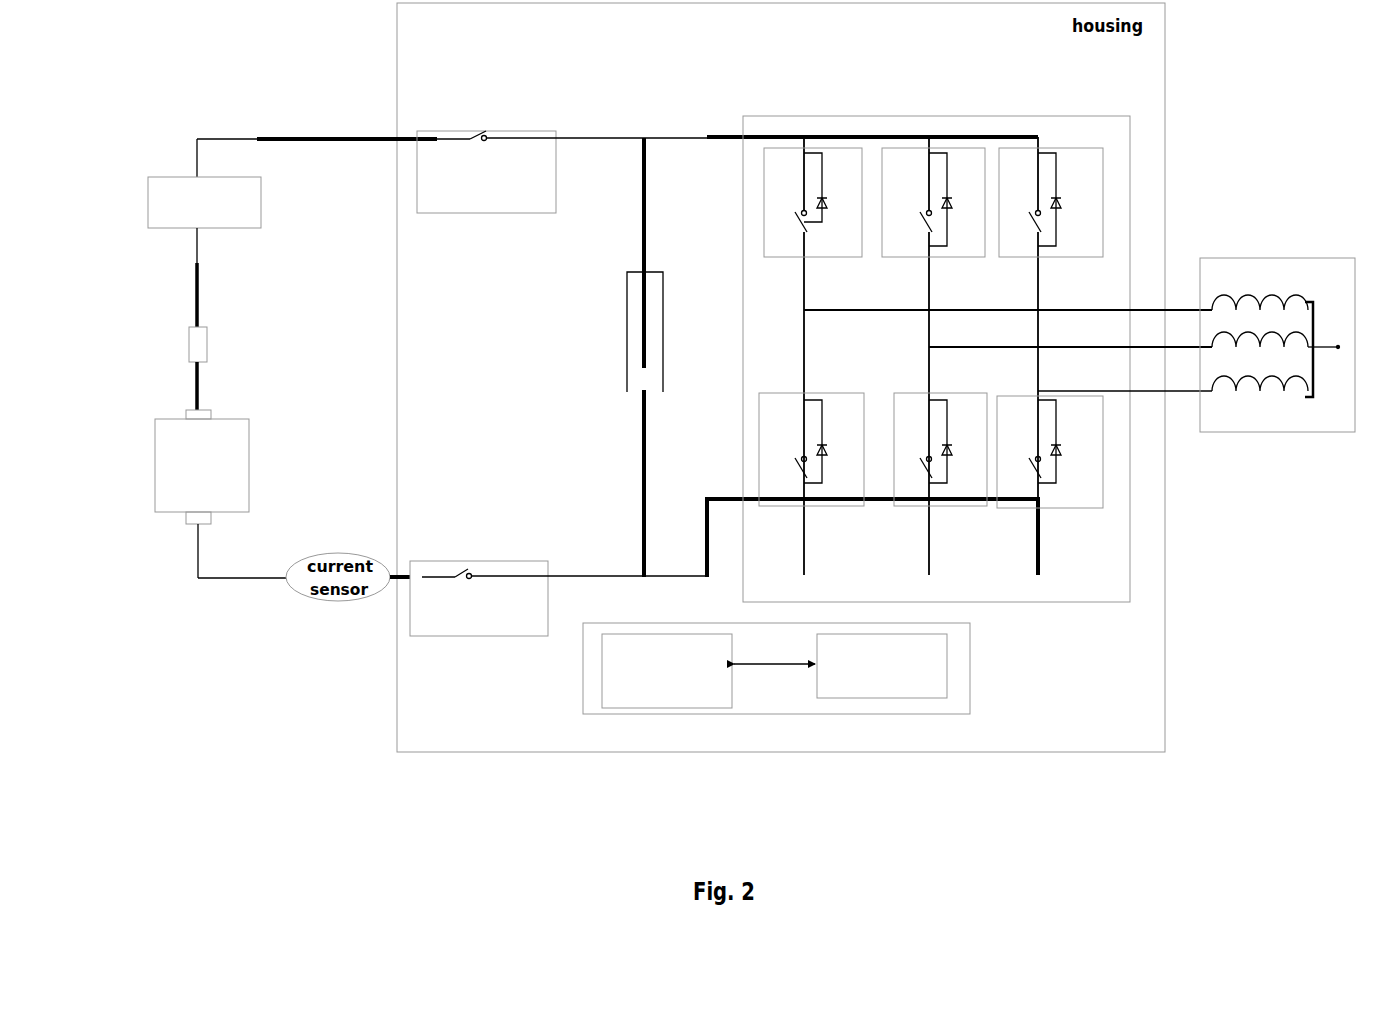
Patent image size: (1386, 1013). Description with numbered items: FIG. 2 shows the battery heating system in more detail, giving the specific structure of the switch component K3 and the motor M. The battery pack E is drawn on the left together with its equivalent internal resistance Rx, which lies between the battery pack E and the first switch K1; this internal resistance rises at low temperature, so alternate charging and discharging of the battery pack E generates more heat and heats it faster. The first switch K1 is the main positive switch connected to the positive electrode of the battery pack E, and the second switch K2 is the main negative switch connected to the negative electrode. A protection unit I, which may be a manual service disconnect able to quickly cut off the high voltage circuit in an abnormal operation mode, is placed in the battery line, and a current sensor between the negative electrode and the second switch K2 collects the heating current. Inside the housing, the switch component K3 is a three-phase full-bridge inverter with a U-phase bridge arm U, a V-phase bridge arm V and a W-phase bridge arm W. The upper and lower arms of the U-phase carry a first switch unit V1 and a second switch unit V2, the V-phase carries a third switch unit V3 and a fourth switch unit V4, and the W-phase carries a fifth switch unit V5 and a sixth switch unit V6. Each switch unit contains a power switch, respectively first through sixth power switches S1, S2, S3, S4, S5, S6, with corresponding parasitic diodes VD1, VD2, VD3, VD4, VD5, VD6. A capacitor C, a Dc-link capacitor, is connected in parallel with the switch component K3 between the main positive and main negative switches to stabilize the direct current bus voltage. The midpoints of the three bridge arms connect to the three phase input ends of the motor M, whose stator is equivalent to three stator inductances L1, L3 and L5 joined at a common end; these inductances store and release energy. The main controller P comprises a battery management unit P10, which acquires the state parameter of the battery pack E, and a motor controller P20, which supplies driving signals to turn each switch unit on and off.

The first switch K1 is at (562, 148).
The second switch K2 is at (558, 614).
The switch component K3 is at (936, 339).
The capacitor C is at (654, 357).
The main controller P is at (804, 668).
The battery management unit P10 is at (667, 671).
The motor controller P20 is at (882, 666).
The first switch unit V1 is at (815, 222).
The second switch unit V2 is at (816, 470).
The third switch unit V3 is at (938, 222).
The fourth switch unit V4 is at (945, 470).
The fifth switch unit V5 is at (1053, 222).
The sixth switch unit V6 is at (1050, 471).
The first power switch S1 is at (791, 210).
The second power switch S2 is at (792, 458).
The third power switch S3 is at (915, 210).
The fourth power switch S4 is at (919, 458).
The fifth power switch S5 is at (1026, 210).
The sixth power switch S6 is at (1027, 458).
The parasitic diode VD1 is at (835, 187).
The parasitic diode VD2 is at (835, 441).
The parasitic diode VD3 is at (959, 199).
The parasitic diode VD4 is at (959, 441).
The parasitic diode VD5 is at (1069, 199).
The parasitic diode VD6 is at (1069, 441).
The U-phase bridge arm U is at (994, 306).
The V-phase bridge arm V is at (1057, 350).
The W-phase bridge arm W is at (1114, 391).
The stator inductance L1 is at (1260, 289).
The stator inductance L3 is at (1260, 329).
The stator inductance L5 is at (1260, 375).
The motor M is at (1277, 345).
The battery pack E is at (202, 467).
The protection unit I is at (204, 202).
The equivalent internal resistance Rx is at (270, 357).